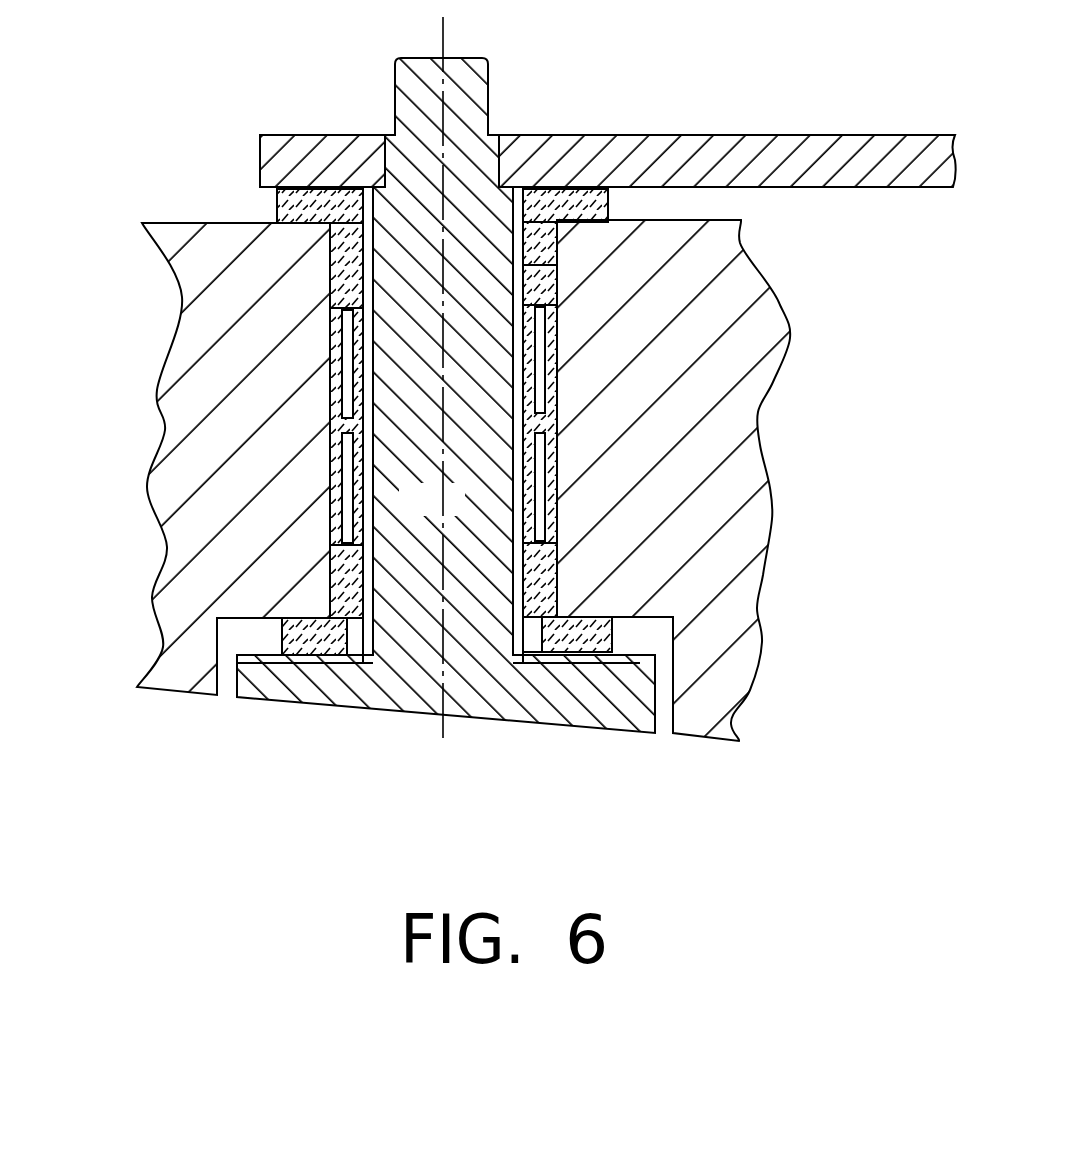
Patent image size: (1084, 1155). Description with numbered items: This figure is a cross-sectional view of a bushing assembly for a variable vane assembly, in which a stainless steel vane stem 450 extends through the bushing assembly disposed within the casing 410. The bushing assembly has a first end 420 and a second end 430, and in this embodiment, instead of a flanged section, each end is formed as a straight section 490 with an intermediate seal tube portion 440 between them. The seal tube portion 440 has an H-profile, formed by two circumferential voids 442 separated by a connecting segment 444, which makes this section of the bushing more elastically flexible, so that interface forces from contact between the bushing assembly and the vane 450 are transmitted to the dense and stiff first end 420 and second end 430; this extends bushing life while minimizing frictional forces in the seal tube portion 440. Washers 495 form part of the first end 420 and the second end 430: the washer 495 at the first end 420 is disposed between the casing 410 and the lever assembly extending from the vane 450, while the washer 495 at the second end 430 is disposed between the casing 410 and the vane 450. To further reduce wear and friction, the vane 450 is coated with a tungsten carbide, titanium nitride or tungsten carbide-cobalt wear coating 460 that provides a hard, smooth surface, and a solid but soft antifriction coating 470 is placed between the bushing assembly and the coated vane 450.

The casing 410 is at (218, 373).
The first end 420 is at (280, 213).
The second end 430 is at (320, 640).
The seal tube portion 440 is at (557, 477).
The circumferential voids 442 is at (533, 387).
The connecting segment 444 is at (335, 433).
The vane stem 450 is at (447, 56).
The wear coating 460 is at (508, 440).
The antifriction coating 470 is at (557, 265).
The straight section 490 is at (557, 297).
The washers 495 is at (588, 200).